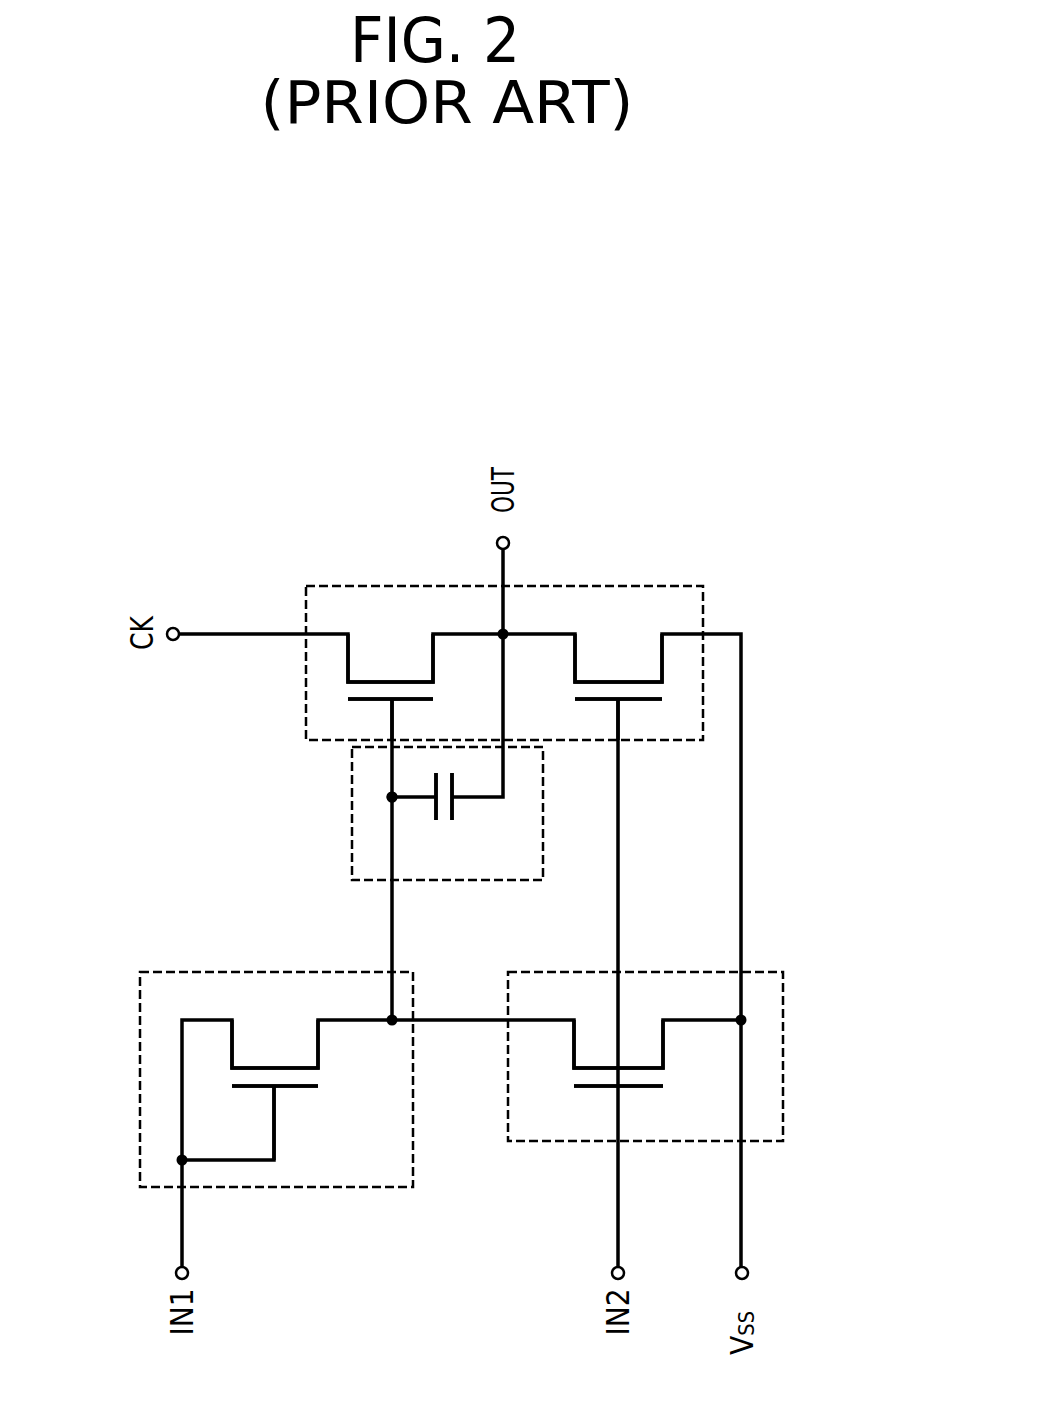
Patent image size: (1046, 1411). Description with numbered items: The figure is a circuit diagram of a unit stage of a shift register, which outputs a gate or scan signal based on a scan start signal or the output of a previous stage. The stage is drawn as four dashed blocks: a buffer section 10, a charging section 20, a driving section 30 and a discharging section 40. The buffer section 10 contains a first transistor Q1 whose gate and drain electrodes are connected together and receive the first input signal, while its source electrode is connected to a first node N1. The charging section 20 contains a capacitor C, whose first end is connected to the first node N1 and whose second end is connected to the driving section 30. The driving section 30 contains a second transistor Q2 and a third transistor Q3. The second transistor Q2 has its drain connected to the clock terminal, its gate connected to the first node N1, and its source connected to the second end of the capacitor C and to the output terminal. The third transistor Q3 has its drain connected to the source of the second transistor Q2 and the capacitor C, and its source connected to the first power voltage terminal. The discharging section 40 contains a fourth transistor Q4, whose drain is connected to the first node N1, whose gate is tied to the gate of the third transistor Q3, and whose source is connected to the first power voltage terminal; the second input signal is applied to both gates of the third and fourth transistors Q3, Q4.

The buffer section 10 is at (140, 1078).
The charging section 20 is at (352, 836).
The driving section 30 is at (370, 585).
The discharging section 40 is at (783, 1065).
The first node N1 is at (392, 797).
The capacitor C is at (443, 812).
The first transistor Q1 is at (275, 1090).
The second transistor Q2 is at (390, 685).
The third transistor Q3 is at (618, 685).
The fourth transistor Q4 is at (618, 1052).